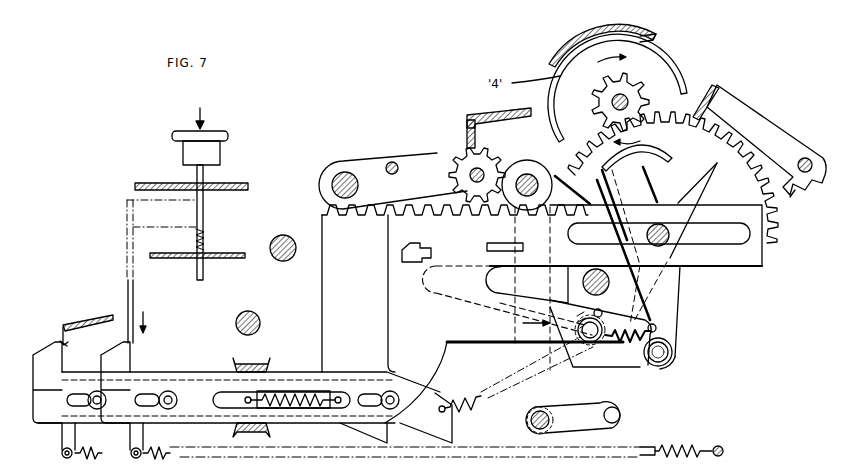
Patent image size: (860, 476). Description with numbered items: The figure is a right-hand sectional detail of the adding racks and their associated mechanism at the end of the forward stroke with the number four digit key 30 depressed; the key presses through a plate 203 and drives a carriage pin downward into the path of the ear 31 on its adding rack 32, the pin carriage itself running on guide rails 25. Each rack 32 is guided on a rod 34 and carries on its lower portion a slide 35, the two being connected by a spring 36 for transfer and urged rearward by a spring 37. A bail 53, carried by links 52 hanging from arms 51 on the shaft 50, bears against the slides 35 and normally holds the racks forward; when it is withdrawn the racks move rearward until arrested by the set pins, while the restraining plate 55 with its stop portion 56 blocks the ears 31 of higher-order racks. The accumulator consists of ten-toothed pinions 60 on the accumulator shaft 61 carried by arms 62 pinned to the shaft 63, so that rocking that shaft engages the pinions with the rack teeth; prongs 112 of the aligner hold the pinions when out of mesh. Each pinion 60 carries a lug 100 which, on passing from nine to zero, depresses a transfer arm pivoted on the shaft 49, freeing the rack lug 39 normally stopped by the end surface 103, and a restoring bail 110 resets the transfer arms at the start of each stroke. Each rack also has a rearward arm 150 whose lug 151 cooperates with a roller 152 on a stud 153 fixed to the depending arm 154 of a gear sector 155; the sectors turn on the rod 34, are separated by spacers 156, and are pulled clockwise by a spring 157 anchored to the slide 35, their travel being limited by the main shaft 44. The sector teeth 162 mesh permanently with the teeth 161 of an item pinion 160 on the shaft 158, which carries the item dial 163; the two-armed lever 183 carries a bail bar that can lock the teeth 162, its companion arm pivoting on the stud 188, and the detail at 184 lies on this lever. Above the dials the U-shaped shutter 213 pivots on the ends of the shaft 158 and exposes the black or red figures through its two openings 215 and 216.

The digit key 30 is at (190, 139).
The key plate 203 is at (247, 184).
The shaft 49 is at (290, 243).
The guide rail 25 is at (258, 318).
The restraining plate 55 is at (92, 318).
The stop portion 56 is at (62, 343).
The stop or ear 31 is at (55, 358).
The adding rack 32 is at (222, 425).
The spring 36 is at (297, 393).
The slide 35 is at (446, 441).
The spring 157 is at (478, 394).
The arm 51 is at (530, 350).
The spring 37 is at (676, 450).
The lug 100 is at (455, 288).
The arm 62 is at (362, 178).
The shaft 63 is at (337, 174).
The restoring bail 110 is at (397, 166).
The pinion 60 is at (497, 163).
The accumulator shaft 61 is at (473, 170).
The prong 112 is at (466, 135).
The shaft 50 is at (541, 182).
The lug 39 is at (519, 243).
The end surface 103 is at (428, 252).
The arm 150 is at (548, 308).
The main shaft 44 is at (583, 285).
The rod 34 is at (661, 225).
The gear sector 155 is at (708, 160).
The depending arm 154 is at (672, 292).
The spacer 156 is at (690, 238).
The lug 151 is at (637, 353).
The roller 152 is at (666, 356).
The stud 153 is at (660, 362).
The link 52 is at (595, 412).
The bail 53 is at (533, 416).
The teeth 162 is at (770, 236).
The shaft 158 is at (620, 93).
The pinion 160 is at (602, 96).
The item dial 163 is at (645, 87).
The teeth 161 is at (650, 92).
The slot or opening 215 is at (570, 56).
The dial shield or shutter 213 is at (594, 33).
The slot or opening 216 is at (619, 37).
The stud 188 is at (705, 88).
The two-armed lever 183 is at (742, 105).
The arm notch 184 is at (797, 197).